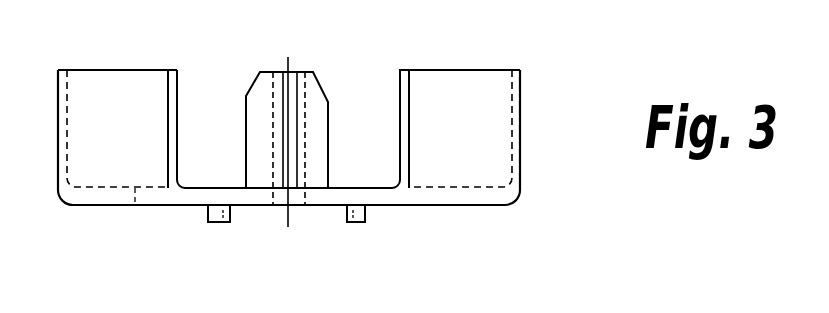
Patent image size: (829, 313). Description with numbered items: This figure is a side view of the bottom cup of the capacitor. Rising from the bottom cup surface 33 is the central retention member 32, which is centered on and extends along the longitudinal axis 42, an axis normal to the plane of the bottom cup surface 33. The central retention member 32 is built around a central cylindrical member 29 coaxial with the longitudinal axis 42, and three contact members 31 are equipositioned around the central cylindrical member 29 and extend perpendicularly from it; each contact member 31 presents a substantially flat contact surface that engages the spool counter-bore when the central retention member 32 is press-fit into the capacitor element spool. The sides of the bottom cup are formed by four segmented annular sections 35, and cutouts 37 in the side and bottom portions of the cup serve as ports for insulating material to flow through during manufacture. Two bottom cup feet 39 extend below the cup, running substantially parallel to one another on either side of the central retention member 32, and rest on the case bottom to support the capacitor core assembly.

The central cylindrical member 29 is at (255, 115).
The contact member 31 is at (247, 137).
The central retention member 32 is at (310, 65).
The bottom cup surface 33 is at (340, 187).
The segmented annular section 35 is at (497, 123).
The cutout 37 is at (380, 93).
The bottom cup foot 39 is at (352, 223).
The longitudinal axis 42 is at (287, 63).